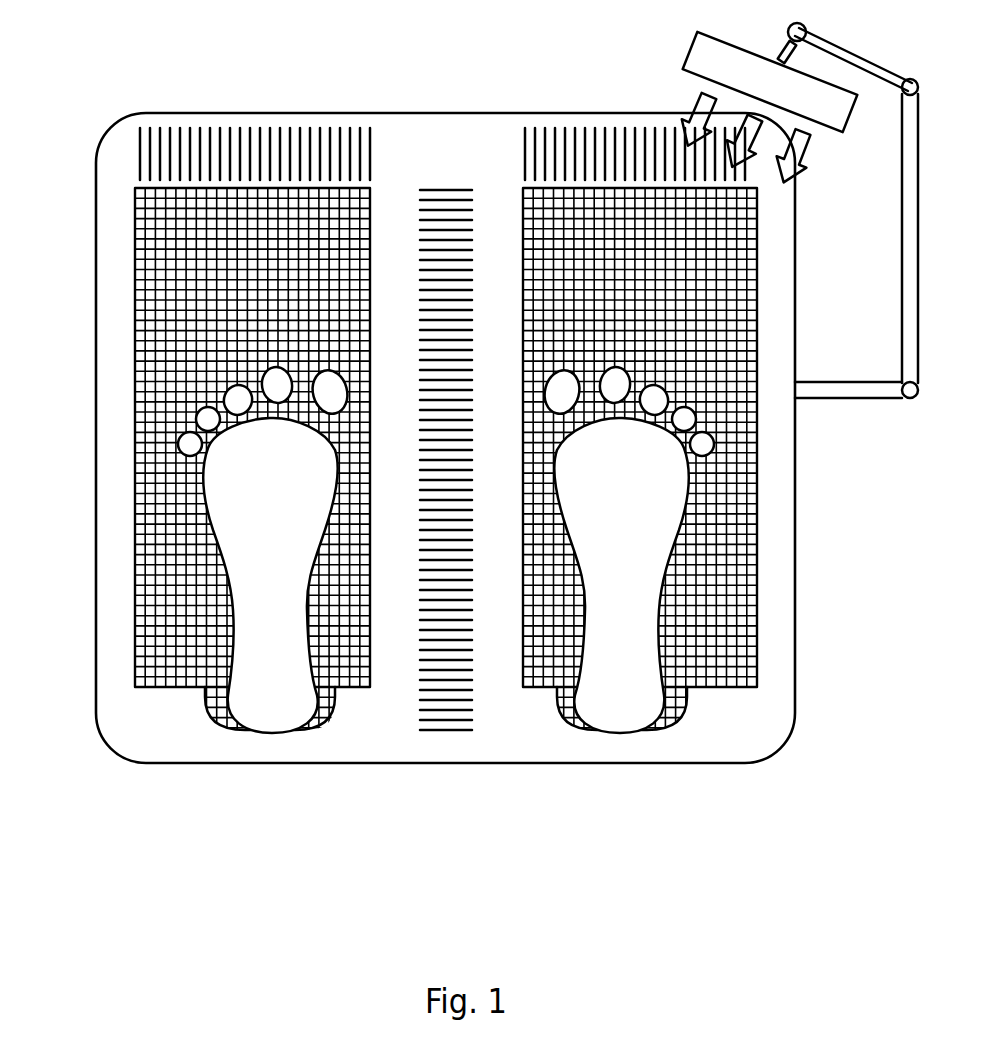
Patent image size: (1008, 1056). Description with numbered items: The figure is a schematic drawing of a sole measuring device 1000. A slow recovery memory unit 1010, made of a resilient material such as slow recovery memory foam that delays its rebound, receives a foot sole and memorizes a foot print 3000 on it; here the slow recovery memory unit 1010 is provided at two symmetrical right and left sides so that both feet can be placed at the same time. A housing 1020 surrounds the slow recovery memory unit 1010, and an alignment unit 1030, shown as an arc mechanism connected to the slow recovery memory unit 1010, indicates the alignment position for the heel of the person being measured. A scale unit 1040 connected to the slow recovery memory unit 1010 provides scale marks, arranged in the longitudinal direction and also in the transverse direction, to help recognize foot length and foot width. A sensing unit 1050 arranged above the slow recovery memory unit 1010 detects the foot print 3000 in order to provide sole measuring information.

The sole measuring device 1000 is at (140, 92).
The slow recovery memory unit 1010 is at (135, 380).
The housing 1020 is at (96, 233).
The alignment unit 1030 is at (250, 733).
The scale unit 1040 is at (302, 126).
The sensing unit 1050 is at (688, 45).
The foot print 3000 is at (446, 549).